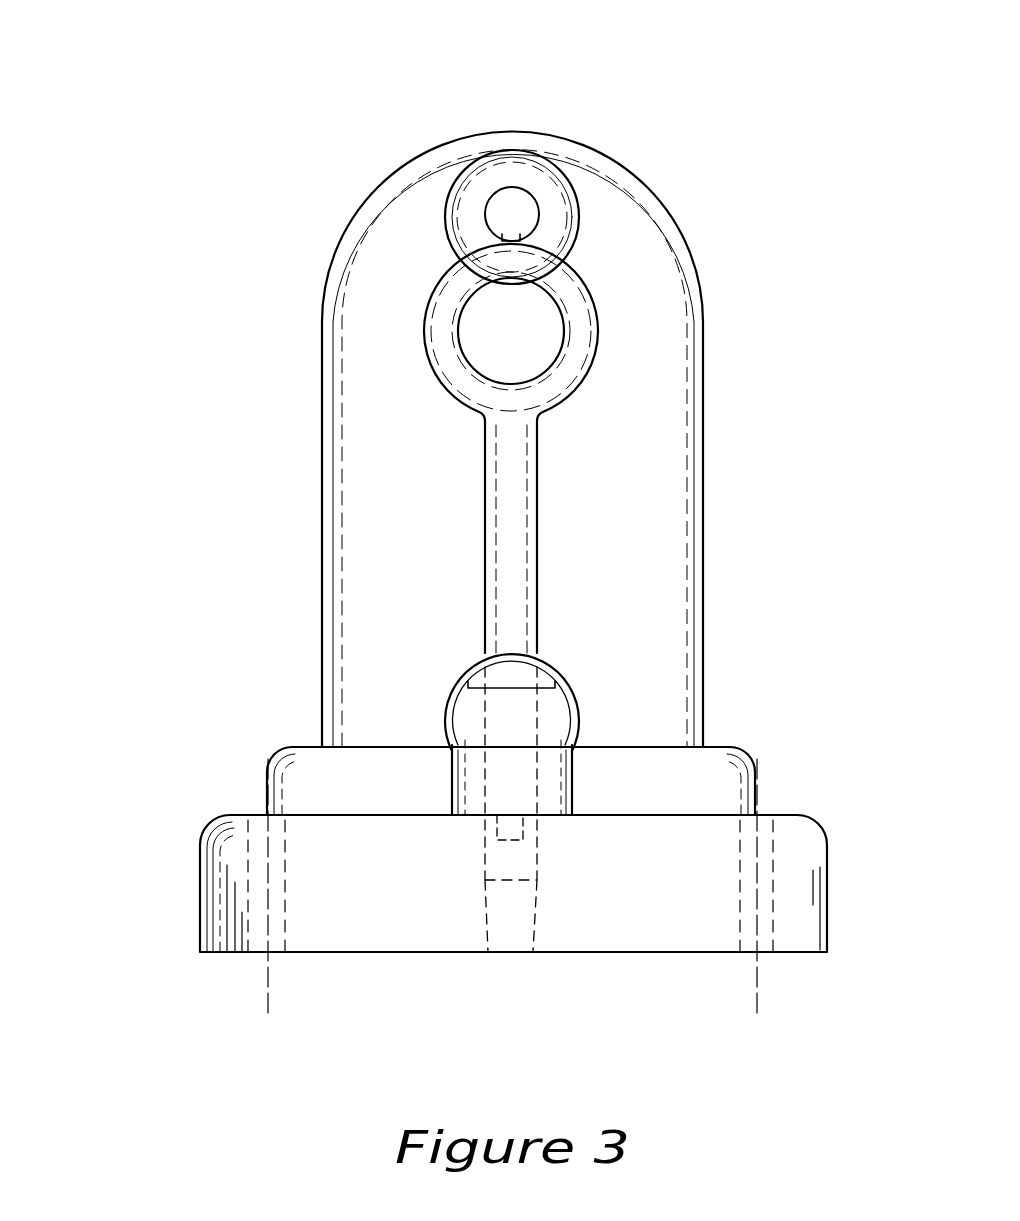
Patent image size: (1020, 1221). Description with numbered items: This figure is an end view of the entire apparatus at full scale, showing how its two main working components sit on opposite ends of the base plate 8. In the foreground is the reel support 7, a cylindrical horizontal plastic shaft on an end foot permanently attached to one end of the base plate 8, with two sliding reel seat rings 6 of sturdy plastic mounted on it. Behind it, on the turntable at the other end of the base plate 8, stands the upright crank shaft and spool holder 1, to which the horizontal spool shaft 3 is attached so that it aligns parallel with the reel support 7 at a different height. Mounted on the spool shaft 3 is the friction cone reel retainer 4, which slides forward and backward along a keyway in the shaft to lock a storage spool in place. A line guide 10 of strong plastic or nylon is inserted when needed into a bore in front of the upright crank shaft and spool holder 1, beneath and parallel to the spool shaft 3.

The upright crank shaft and spool holder 1 is at (367, 197).
The spool shaft 3 is at (538, 205).
The friction cone reel retainer 4 is at (473, 158).
The sliding reel seat rings 6 is at (581, 703).
The reel support 7 is at (573, 782).
The base plate 8 is at (203, 832).
The line guide 10 is at (485, 547).